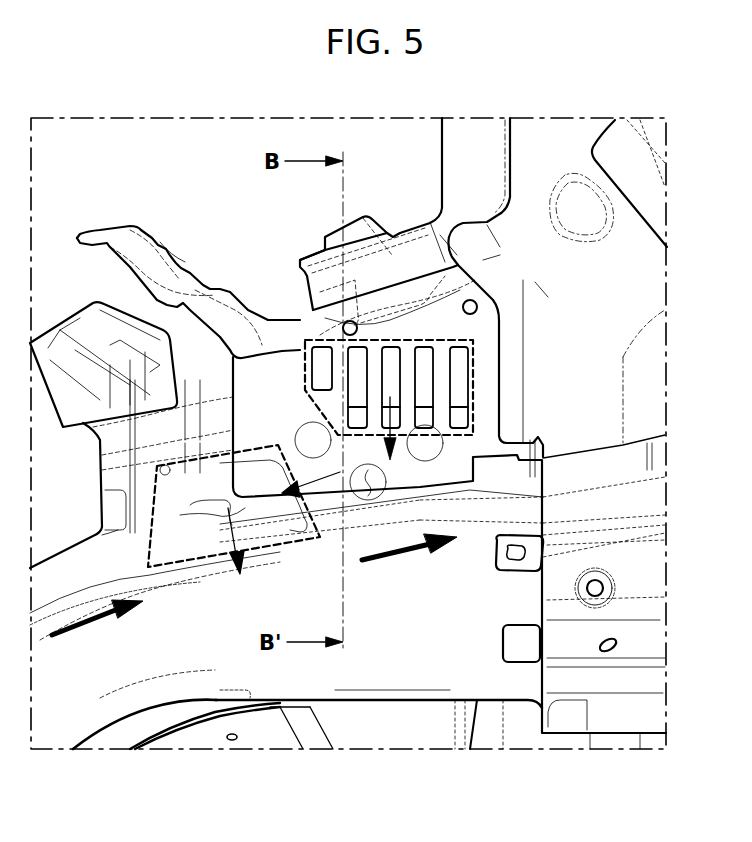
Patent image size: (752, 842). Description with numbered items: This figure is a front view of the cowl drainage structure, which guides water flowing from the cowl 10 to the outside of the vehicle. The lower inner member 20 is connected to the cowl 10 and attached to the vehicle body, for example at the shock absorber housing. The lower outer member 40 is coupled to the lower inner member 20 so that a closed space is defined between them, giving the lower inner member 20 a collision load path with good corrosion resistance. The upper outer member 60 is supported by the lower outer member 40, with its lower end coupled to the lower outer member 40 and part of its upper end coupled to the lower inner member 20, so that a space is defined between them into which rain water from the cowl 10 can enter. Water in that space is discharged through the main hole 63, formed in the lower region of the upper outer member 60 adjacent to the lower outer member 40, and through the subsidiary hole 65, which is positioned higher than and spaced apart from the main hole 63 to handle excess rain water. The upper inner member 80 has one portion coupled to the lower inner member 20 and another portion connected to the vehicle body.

The cowl 10 is at (130, 243).
The lower inner member 20 is at (165, 467).
The lower outer member 40 is at (423, 642).
The upper outer member 60 is at (508, 477).
The main hole 63 is at (280, 513).
The subsidiary hole 65 is at (300, 494).
The upper inner member 80 is at (263, 473).